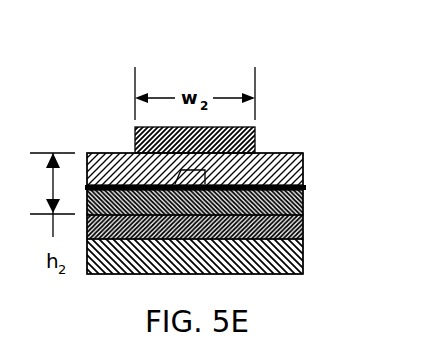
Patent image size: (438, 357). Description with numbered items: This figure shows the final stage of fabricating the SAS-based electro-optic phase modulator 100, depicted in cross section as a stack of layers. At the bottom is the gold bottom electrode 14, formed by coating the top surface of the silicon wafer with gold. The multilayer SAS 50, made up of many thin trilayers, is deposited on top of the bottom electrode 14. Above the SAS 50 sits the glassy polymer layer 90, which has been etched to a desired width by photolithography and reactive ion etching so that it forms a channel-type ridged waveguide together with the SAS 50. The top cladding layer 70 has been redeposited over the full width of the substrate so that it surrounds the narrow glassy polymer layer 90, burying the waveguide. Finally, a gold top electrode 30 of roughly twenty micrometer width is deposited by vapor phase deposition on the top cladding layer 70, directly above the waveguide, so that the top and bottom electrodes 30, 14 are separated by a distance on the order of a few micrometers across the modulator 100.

The SAS-based electro-optic phase modulator 100 is at (81, 98).
The top electrode 30 is at (256, 143).
The top cladding layer 70 is at (289, 160).
The glassy polymer layer 90 is at (177, 180).
The multilayer SAS 50 is at (302, 184).
The bottom electrode 14 is at (302, 205).